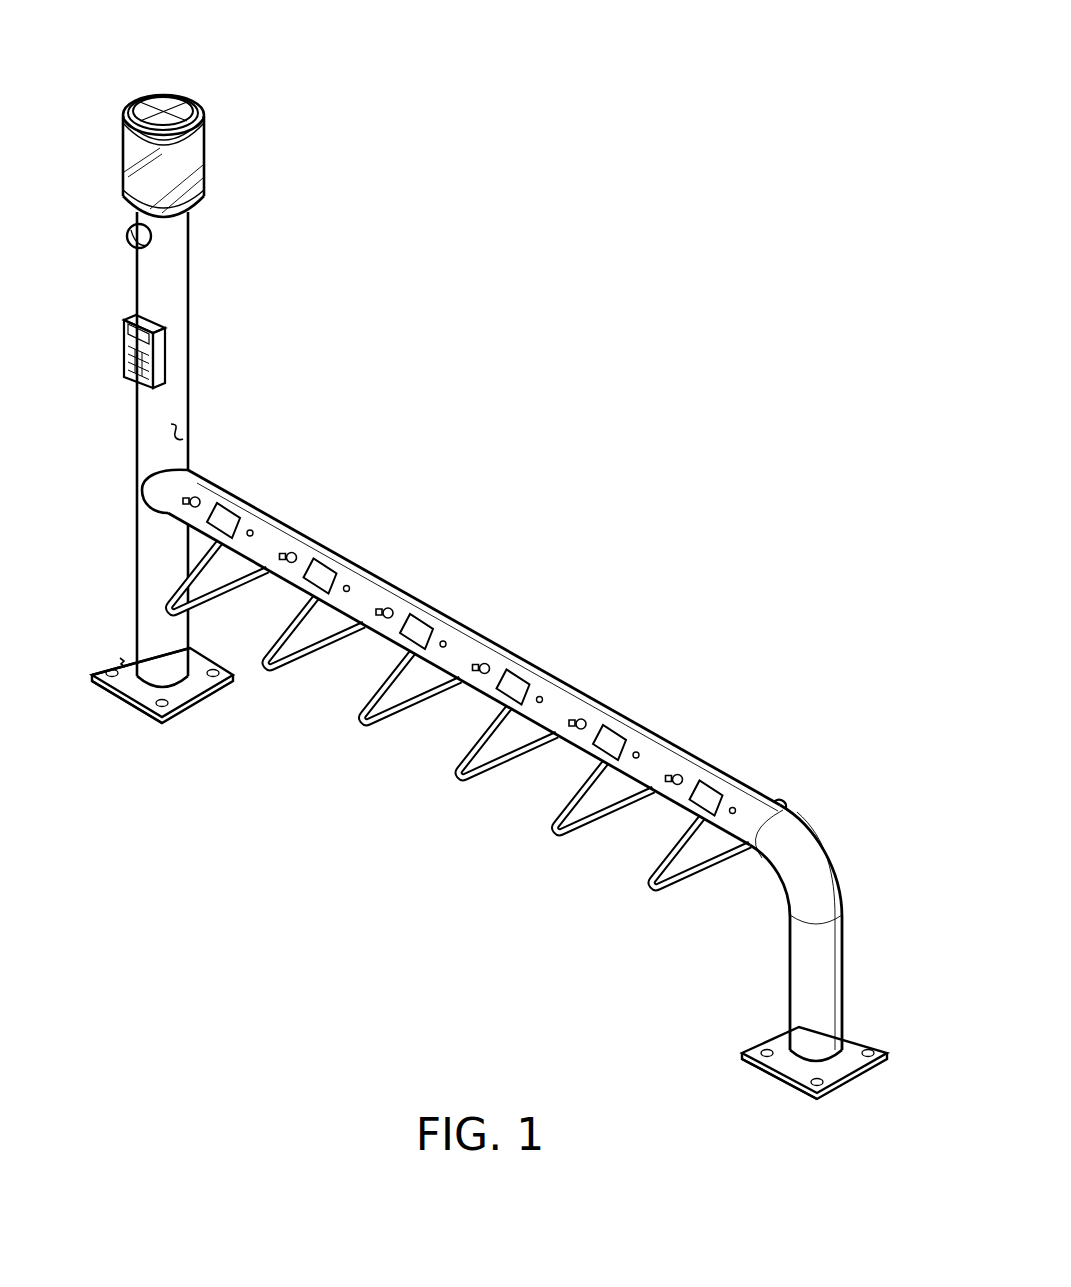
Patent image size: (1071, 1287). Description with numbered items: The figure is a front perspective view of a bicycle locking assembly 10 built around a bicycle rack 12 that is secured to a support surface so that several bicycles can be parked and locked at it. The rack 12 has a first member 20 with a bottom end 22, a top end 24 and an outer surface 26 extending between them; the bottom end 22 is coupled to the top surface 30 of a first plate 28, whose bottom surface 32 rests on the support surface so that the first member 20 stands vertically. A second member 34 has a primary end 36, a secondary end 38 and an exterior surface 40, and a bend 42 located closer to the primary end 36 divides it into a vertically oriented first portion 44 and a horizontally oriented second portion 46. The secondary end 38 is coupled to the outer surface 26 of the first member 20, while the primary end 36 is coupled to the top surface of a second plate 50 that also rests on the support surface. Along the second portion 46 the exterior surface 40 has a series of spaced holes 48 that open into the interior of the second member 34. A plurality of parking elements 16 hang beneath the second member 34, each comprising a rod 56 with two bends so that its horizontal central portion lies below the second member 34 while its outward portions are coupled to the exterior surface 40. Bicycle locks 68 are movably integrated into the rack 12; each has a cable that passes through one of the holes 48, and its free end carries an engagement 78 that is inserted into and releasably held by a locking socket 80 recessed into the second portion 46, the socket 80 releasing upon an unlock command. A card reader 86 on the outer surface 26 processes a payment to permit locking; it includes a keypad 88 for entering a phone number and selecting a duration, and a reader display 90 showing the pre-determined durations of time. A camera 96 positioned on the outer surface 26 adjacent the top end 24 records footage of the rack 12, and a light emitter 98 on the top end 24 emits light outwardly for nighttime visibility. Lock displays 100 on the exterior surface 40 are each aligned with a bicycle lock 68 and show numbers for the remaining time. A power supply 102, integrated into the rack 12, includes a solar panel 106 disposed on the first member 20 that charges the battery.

The bicycle locking assembly 10 is at (533, 387).
The bicycle rack 12 is at (501, 801).
The parking elements 16 is at (459, 743).
The first member 20 is at (206, 449).
The bottom end 22 is at (129, 681).
The top end 24 is at (175, 156).
The outer surface 26 is at (185, 432).
The first plate 28 is at (97, 672).
The top surface 30 is at (126, 665).
The bottom surface 32 is at (102, 690).
The second member 34 is at (780, 803).
The primary end 36 is at (818, 1060).
The secondary end 38 is at (167, 482).
The exterior surface 40 is at (867, 986).
The bend 42 is at (838, 867).
The first portion 44 is at (848, 1007).
The second portion 46 is at (575, 687).
The holes 48 is at (200, 500).
The second plate 50 is at (768, 1097).
The rod 56 is at (704, 866).
The bicycle locks 68 is at (463, 645).
The engagement 78 is at (553, 731).
The locking socket 80 is at (730, 806).
The card reader 86 is at (95, 339).
The keypad 88 is at (138, 368).
The reader display 90 is at (137, 330).
The camera 96 is at (128, 234).
The light emitter 98 is at (140, 176).
The lock displays 100 is at (320, 575).
The power supply 102 is at (175, 110).
The solar panel 106 is at (148, 93).